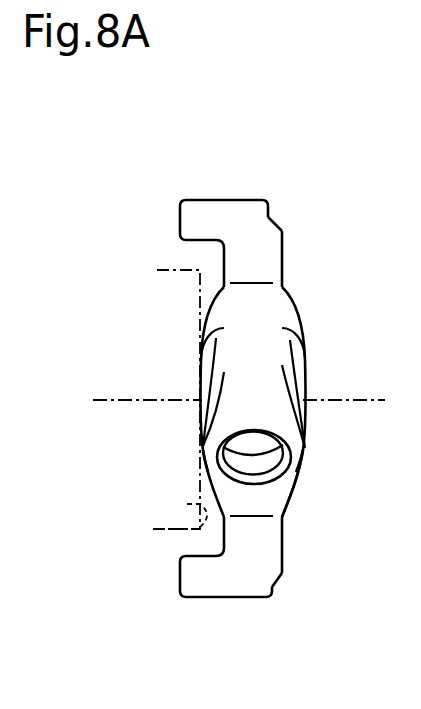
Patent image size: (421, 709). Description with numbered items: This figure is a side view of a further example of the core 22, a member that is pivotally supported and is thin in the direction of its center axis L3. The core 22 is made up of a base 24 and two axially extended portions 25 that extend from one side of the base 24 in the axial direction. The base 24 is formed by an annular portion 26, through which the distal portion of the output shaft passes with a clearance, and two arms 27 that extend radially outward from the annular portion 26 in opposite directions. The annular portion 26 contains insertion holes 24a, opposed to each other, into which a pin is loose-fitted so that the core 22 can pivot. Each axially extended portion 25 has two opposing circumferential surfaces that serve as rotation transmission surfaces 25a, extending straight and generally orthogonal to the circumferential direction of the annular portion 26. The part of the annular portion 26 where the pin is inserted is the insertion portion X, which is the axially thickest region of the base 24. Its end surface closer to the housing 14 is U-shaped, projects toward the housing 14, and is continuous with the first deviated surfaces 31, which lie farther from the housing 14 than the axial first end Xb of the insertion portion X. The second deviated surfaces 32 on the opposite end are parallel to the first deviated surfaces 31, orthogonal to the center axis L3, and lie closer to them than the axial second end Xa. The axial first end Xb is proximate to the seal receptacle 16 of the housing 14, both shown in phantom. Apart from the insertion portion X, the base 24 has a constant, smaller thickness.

The core 22 is at (298, 186).
The axially extended portion 25 is at (197, 200).
The rotation transmission surface 25a is at (210, 218).
The arm 27 is at (267, 257).
The first deviated surface 31 is at (217, 308).
The second deviated surface 32 is at (297, 310).
The annular portion 26 is at (257, 380).
The base 24 is at (307, 420).
The insertion hole 24a is at (257, 465).
The insertion portion X is at (204, 446).
The axial second end Xa is at (306, 460).
The axial first end Xb is at (200, 460).
The center axis of the core L3 is at (112, 398).
The seal receptacle 16 is at (187, 504).
The housing 14 is at (150, 523).